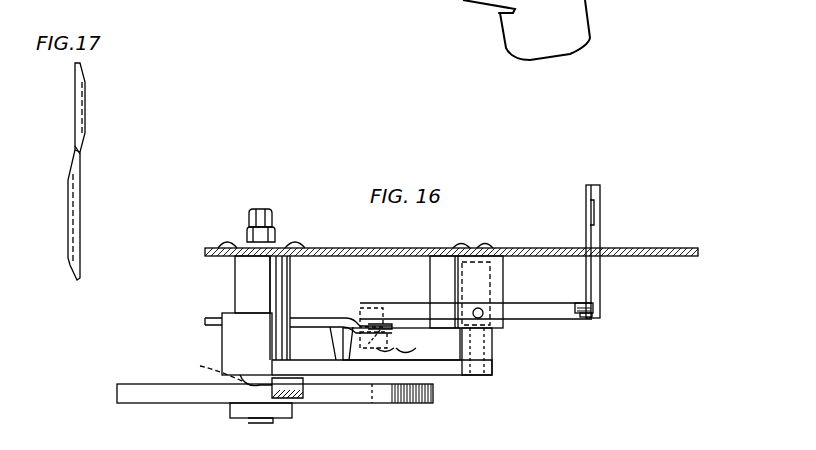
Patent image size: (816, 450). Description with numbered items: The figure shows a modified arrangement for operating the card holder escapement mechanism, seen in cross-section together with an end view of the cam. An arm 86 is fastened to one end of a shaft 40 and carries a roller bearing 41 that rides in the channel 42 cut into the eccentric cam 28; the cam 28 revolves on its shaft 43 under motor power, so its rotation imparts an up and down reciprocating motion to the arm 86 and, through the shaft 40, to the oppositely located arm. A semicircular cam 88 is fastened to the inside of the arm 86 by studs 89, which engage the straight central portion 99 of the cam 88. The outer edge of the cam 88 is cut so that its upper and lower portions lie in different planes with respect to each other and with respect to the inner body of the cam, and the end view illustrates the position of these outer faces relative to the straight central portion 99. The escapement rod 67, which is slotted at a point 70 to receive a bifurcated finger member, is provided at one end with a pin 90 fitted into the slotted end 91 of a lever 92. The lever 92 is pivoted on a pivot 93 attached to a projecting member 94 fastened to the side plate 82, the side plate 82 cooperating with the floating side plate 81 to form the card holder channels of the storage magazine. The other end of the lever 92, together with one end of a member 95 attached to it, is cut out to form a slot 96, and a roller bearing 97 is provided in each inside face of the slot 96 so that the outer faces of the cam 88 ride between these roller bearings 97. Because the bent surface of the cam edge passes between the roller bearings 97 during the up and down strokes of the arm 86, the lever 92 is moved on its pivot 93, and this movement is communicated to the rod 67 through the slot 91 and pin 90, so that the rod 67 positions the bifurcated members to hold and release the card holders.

In FIG. 16, the eccentric cam 28 is at (172, 398).
In FIG. 16, the shaft 40 is at (272, 212).
In FIG. 16, the roller bearing 41 is at (296, 400).
In FIG. 16, the channel 42 is at (307, 388).
In FIG. 16, the shaft 43 is at (275, 233).
In FIG. 16, the rod 67 is at (601, 270).
In FIG. 16, the slot 70 is at (594, 212).
In FIG. 16, the side plate 81 is at (544, 247).
In FIG. 16, the side plate 82 is at (408, 247).
In FIG. 16, the arm 86 is at (444, 365).
In FIG. 17, the semicircular cam 88 is at (76, 275).
In FIG. 16, the semicircular cam 88 is at (318, 318).
In FIG. 16, the studs 89 is at (331, 343).
In FIG. 16, the pin 90 is at (582, 315).
In FIG. 16, the slotted end 91 is at (588, 318).
In FIG. 16, the lever 92 is at (537, 311).
In FIG. 16, the pivot 93 is at (484, 313).
In FIG. 16, the projecting member 94 is at (484, 273).
In FIG. 16, the member 95 is at (418, 403).
In FIG. 16, the slot 96 is at (392, 326).
In FIG. 16, the roller bearing 97 is at (380, 330).
In FIG. 17, the straight central portion 99 is at (80, 155).